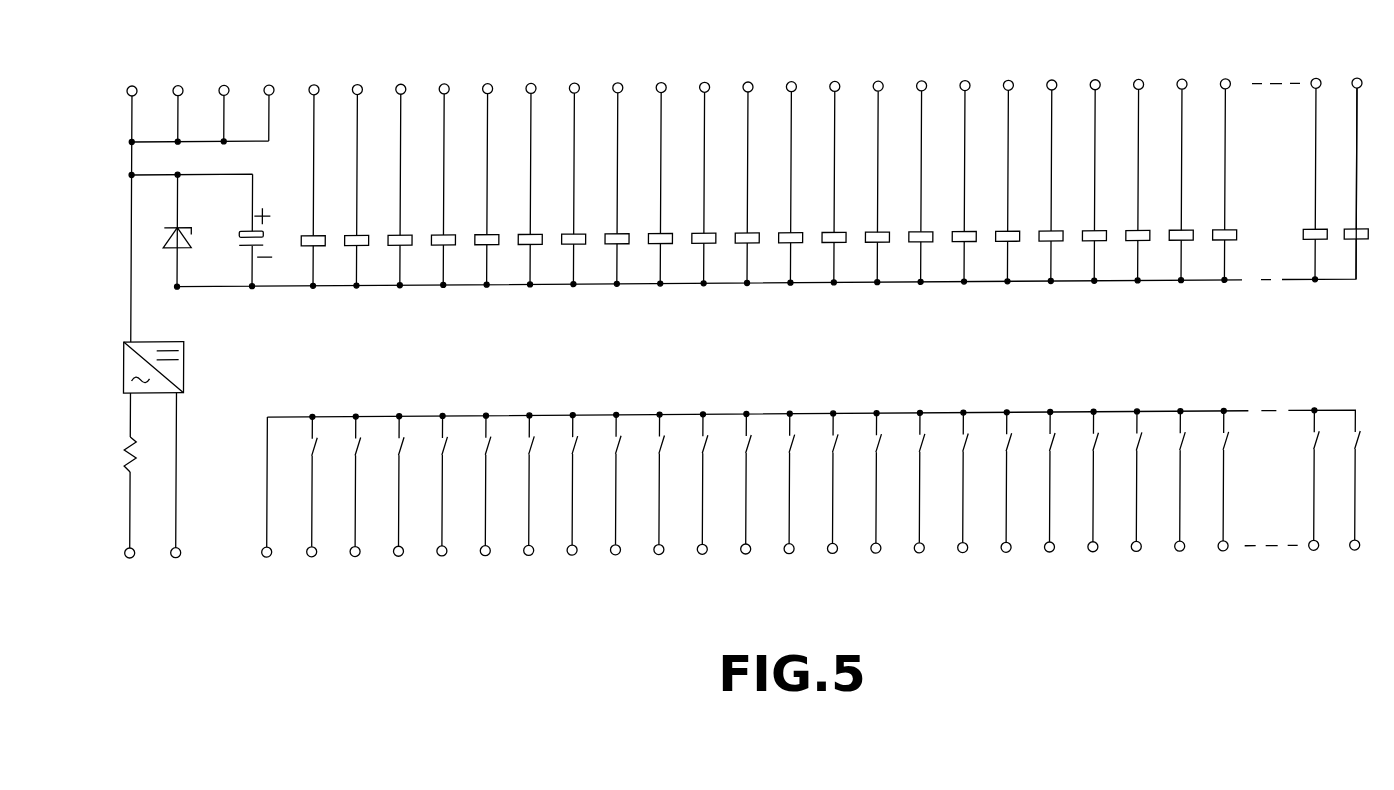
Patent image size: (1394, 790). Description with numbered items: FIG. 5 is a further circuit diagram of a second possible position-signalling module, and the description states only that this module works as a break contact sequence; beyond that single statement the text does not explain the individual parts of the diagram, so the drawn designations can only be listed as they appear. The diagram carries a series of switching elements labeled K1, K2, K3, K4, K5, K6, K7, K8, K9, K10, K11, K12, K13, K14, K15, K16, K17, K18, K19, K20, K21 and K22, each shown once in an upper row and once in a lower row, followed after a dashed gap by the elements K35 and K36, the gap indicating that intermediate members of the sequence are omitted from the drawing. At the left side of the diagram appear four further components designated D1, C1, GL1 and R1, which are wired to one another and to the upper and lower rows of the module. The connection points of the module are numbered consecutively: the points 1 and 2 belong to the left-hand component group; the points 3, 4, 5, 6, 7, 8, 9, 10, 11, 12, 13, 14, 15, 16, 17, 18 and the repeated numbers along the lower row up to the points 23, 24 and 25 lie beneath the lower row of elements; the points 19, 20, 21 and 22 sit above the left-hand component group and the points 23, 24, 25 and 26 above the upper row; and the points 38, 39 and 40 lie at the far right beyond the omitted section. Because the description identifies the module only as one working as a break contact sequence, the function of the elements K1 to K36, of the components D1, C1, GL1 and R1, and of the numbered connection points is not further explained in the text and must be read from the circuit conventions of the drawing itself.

The relay K1 (coil and contact) K1 is at (303, 321).
The relay K2 (coil and contact) K2 is at (346, 320).
The relay K3 (coil and contact) K3 is at (390, 320).
The relay K4 (coil and contact) K4 is at (433, 320).
The relay K5 (coil and contact) K5 is at (476, 320).
The relay K6 (coil and contact) K6 is at (520, 319).
The relay K7 (coil and contact) K7 is at (563, 319).
The relay K8 (coil and contact) K8 is at (607, 319).
The relay K9 (coil and contact) K9 is at (650, 318).
The relay K10 (coil and contact) K10 is at (687, 318).
The relay K11 (coil and contact) K11 is at (731, 318).
The relay K12 (coil and contact) K12 is at (774, 318).
The relay K13 (coil and contact) K13 is at (818, 317).
The relay K14 (coil and contact) K14 is at (861, 317).
The relay K15 (coil and contact) K15 is at (904, 317).
The relay K16 (coil and contact) K16 is at (948, 317).
The relay K17 (coil and contact) K17 is at (991, 316).
The relay K18 (coil and contact) K18 is at (1035, 316).
The relay K19 (coil and contact) K19 is at (1078, 316).
The relay K20 (coil and contact) K20 is at (1121, 315).
The relay K21 (coil and contact) K21 is at (1165, 315).
The relay K22 (coil and contact) K22 is at (1208, 315).
The relay K35 (coil and contact) K35 is at (1299, 314).
The relay K36 (coil and contact) K36 is at (1340, 287).
The diode D1 is at (166, 243).
The capacitor C1 is at (240, 236).
The rectifier GL1 is at (125, 368).
The resistor R1 is at (128, 462).
The terminal 1 is at (219, 322).
The terminal 2 is at (265, 321).
The terminal 3 is at (333, 321).
The terminal 4 is at (377, 321).
The terminal 5 is at (420, 321).
The terminal 6 is at (464, 320).
The terminal 7 is at (507, 320).
The terminal 8 is at (550, 320).
The terminal 9 is at (594, 320).
The terminal 10 is at (637, 319).
The terminal 11 is at (681, 319).
The terminal 12 is at (724, 319).
The terminal 13 is at (768, 318).
The terminal 14 is at (811, 318).
The terminal 15 is at (854, 318).
The terminal 16 is at (898, 318).
The terminal 17 is at (941, 317).
The terminal 18 is at (985, 317).
The terminal 19 is at (546, 321).
The terminal 20 is at (591, 320).
The terminal 21 is at (635, 320).
The terminal 22 is at (680, 320).
The terminal 23 is at (1114, 316).
The terminal 24 is at (1158, 316).
The terminal 25 is at (1201, 316).
The terminal 26 is at (1225, 69).
The terminal 38 is at (1311, 560).
The terminal 39 is at (1334, 315).
The terminal 40 is at (1356, 68).